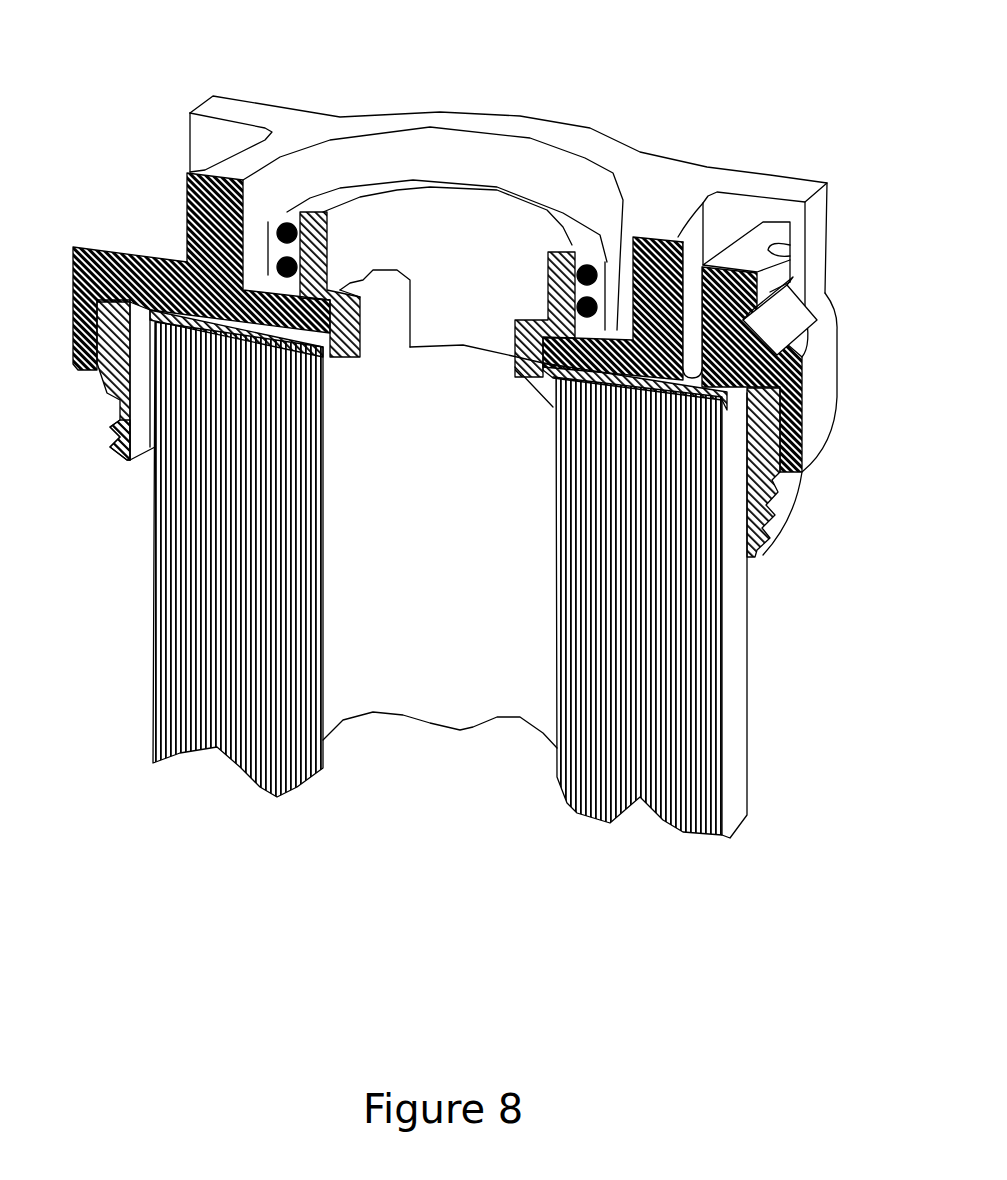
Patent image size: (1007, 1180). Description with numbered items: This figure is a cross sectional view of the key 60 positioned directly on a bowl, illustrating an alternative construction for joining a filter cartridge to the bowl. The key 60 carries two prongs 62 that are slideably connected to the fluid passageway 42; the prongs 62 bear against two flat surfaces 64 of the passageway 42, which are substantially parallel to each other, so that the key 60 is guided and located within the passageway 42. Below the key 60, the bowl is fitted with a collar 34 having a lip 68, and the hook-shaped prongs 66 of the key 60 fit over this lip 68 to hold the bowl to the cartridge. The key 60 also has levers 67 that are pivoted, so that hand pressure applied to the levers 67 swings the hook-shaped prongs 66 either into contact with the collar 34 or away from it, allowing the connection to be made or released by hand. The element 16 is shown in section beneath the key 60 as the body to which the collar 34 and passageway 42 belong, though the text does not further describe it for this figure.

The tubular body 16 is at (585, 385).
The collar 34 is at (89, 464).
The fluid passageway 42 is at (447, 131).
The key 60 is at (513, 284).
The prongs 62 is at (493, 230).
The flat surfaces 64 is at (517, 327).
The hook-shaped prongs 66 is at (442, 404).
The levers 67 is at (788, 209).
The lip 68 is at (482, 300).